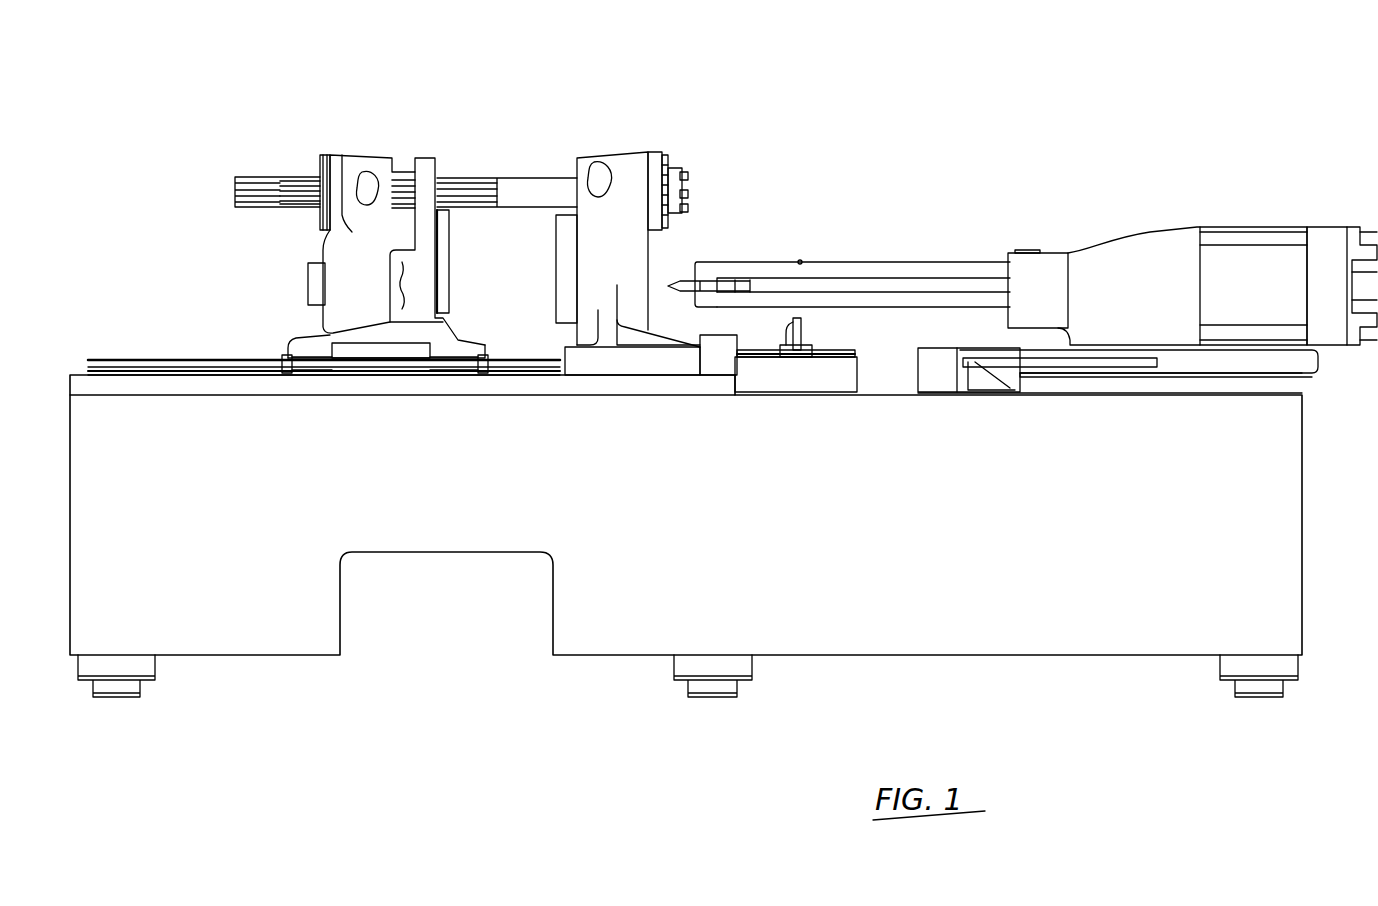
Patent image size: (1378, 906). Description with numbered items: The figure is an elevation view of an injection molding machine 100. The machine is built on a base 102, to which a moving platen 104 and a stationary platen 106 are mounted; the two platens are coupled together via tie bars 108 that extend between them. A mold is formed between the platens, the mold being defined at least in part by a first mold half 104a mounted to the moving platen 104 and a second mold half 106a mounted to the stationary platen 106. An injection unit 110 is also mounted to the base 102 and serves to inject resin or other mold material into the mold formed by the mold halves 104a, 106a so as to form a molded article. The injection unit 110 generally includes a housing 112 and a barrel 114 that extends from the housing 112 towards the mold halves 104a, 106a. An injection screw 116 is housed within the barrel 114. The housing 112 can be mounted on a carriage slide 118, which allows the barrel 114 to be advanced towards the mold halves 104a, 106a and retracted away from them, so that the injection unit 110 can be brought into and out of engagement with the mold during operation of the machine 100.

The injection molding machine 100 is at (957, 77).
The base 102 is at (957, 562).
The moving platen 104 is at (353, 168).
The first mold half 104a is at (441, 254).
The stationary platen 106 is at (620, 158).
The second mold half 106a is at (563, 297).
The tie bars 108 is at (508, 185).
The injection unit 110 is at (1192, 259).
The housing 112 is at (1188, 312).
The barrel 114 is at (773, 268).
The injection screw 116 is at (815, 283).
The carriage slide 118 is at (1290, 380).